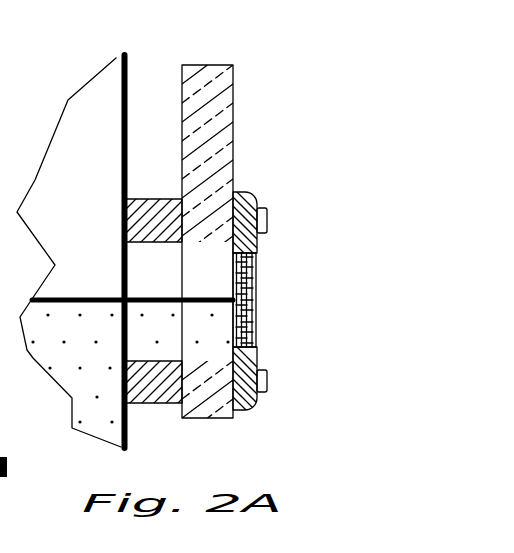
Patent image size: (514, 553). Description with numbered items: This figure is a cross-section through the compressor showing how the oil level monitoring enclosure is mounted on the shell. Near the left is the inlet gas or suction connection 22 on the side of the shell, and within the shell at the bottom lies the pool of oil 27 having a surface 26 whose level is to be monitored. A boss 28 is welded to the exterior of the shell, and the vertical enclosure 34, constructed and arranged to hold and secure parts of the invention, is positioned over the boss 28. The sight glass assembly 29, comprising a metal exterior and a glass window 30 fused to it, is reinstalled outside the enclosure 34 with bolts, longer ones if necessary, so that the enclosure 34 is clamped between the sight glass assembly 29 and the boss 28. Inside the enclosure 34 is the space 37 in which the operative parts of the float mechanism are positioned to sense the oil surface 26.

The inlet gas or suction connection 22 is at (0, 79).
The oil surface 26 is at (97, 299).
The pool of oil 27 is at (80, 383).
The boss 28 is at (146, 199).
The sight glass assembly 29 is at (247, 191).
The glass window 30 is at (257, 300).
The vertical enclosure 34 is at (205, 65).
The space 37 is at (249, 273).